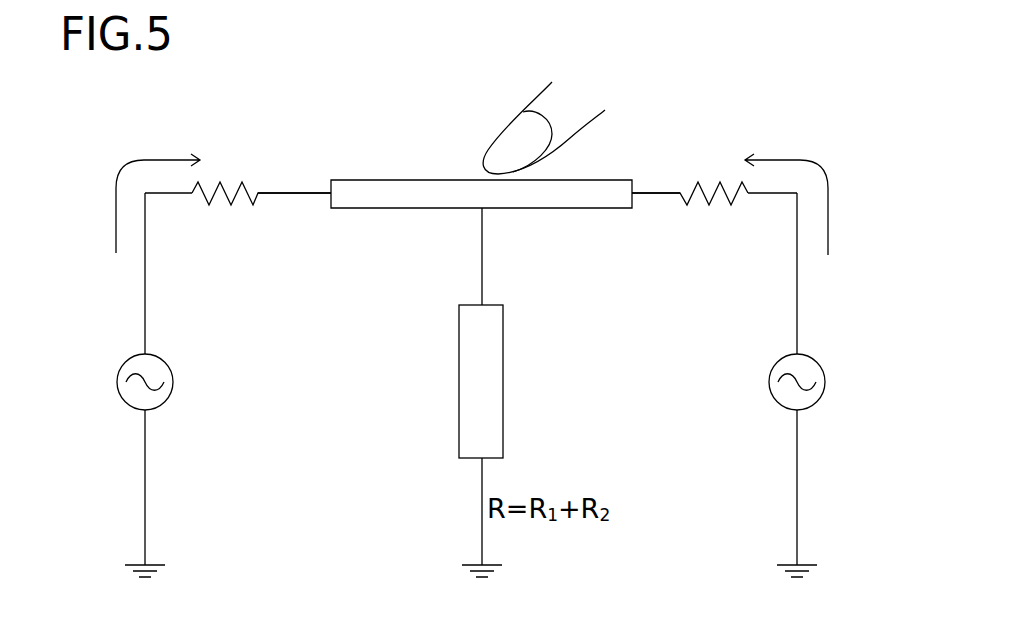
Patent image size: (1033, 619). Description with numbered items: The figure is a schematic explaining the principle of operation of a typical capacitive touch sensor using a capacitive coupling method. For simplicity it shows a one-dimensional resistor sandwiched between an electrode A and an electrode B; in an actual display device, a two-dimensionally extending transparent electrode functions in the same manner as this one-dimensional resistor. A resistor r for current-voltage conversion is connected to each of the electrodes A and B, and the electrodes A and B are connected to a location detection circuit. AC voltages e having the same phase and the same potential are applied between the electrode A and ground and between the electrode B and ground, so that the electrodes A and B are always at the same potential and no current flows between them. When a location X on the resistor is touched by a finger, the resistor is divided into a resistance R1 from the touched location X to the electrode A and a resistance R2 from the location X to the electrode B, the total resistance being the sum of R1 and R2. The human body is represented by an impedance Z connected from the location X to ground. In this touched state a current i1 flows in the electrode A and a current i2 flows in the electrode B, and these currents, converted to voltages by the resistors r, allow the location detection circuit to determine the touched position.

The current flowing in the electrode A i1 is at (152, 191).
The current flowing in the electrode B i2 is at (787, 191).
The resistor for current-voltage conversion r is at (470, 210).
The electrode A is at (294, 171).
The electrode B is at (656, 172).
The resistance from the touched location to electrode A R1 is at (406, 215).
The resistance from the touched location to electrode B R2 is at (557, 215).
The location touched by a finger X is at (450, 172).
The impedance of the human Z is at (481, 381).
The AC voltage e is at (479, 374).